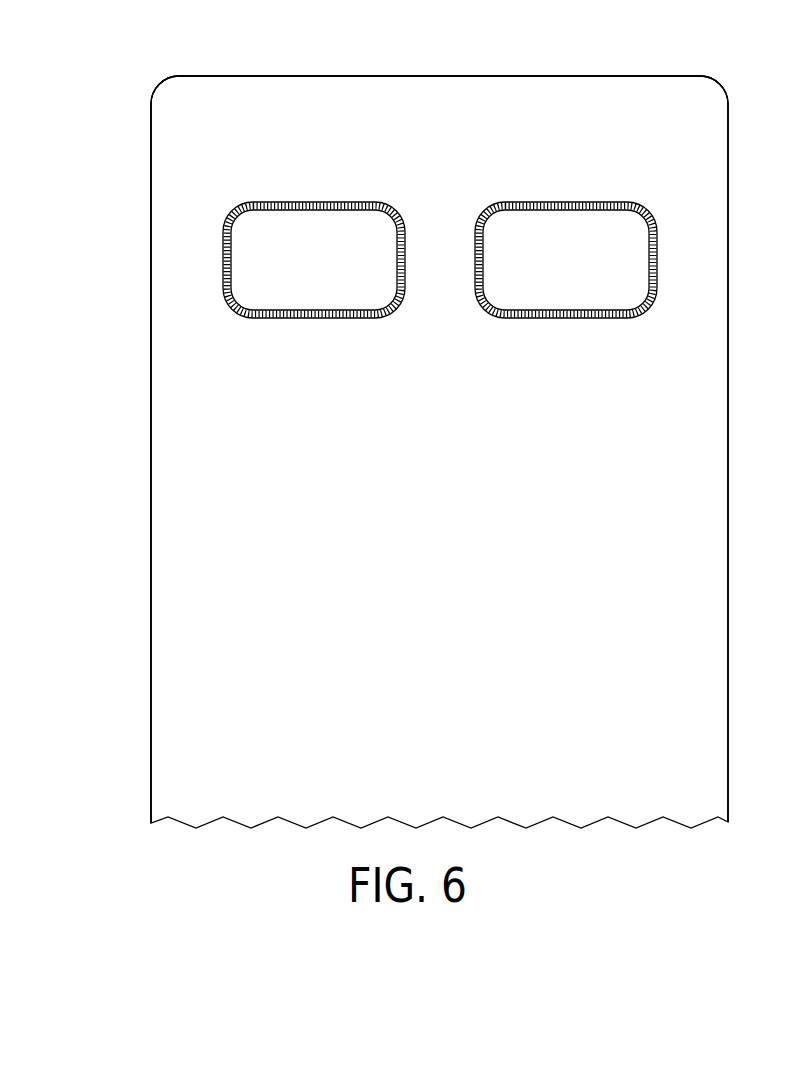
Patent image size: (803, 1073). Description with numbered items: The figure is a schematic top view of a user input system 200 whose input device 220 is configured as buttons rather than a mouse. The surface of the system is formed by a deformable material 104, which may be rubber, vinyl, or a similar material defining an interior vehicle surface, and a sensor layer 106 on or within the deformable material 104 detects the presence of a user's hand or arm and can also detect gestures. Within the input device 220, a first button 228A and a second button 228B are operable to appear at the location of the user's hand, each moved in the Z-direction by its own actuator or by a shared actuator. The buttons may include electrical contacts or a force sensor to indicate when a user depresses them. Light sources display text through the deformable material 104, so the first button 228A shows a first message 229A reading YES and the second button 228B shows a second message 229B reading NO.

The user input system 200 is at (384, 415).
The input device 220 is at (263, 118).
The deformable material 104 is at (472, 605).
The sensor layer 106 is at (472, 605).
The first button 228A is at (315, 201).
The second button 228B is at (565, 201).
The first message 229A is at (293, 295).
The second message 229B is at (536, 295).